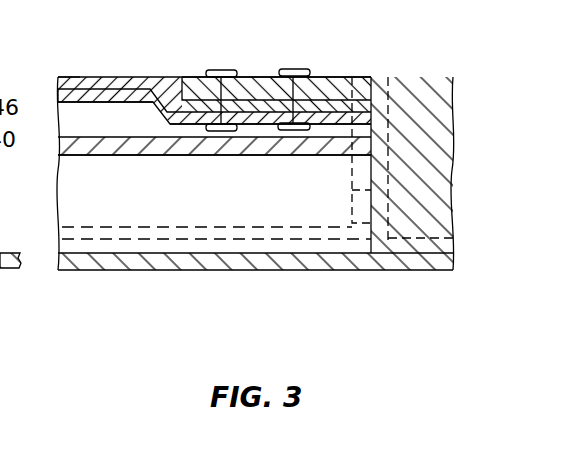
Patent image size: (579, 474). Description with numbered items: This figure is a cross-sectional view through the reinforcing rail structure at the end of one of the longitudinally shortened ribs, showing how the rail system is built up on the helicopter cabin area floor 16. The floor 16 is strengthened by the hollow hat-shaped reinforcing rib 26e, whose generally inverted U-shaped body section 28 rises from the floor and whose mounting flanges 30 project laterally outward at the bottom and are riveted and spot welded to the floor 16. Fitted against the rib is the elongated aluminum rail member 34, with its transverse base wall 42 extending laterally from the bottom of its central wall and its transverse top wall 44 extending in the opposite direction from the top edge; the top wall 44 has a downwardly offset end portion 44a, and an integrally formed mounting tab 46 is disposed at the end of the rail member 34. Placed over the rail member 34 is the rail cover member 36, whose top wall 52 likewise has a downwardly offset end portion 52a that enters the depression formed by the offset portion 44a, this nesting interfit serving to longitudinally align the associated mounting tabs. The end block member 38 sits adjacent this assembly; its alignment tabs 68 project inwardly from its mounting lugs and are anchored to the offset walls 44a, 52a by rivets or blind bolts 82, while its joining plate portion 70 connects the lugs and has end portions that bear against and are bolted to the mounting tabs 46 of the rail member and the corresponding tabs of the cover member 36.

The cabin area floor 16 is at (262, 256).
The reinforcing rib structure 26e is at (129, 134).
The inverted U-shaped body section 28 is at (153, 200).
The mounting flanges 30 is at (93, 245).
The rail member 34 is at (54, 97).
The rail cover member 36 is at (56, 78).
The end block member 38 is at (427, 74).
The base wall 42 is at (165, 233).
The top wall 44 is at (93, 102).
The downwardly offset end portions 44a is at (258, 124).
The mounting tabs 46 is at (29, 104).
The top wall 52 is at (84, 84).
The downwardly offset end portions 52a is at (245, 100).
The alignment tabs 68 is at (332, 78).
The joining plate portion 70 is at (370, 172).
The rivets or blind bolts 82 is at (219, 70).